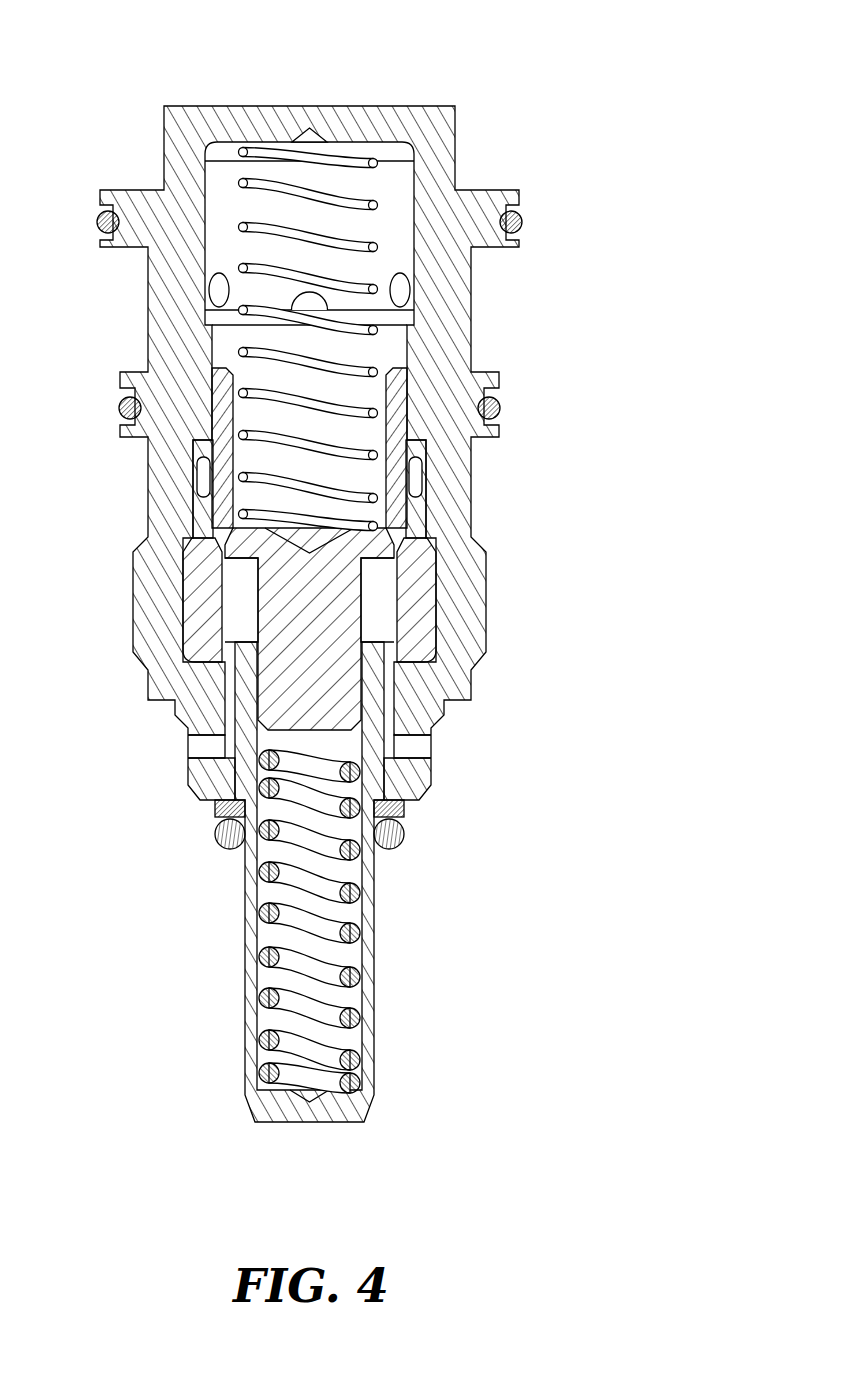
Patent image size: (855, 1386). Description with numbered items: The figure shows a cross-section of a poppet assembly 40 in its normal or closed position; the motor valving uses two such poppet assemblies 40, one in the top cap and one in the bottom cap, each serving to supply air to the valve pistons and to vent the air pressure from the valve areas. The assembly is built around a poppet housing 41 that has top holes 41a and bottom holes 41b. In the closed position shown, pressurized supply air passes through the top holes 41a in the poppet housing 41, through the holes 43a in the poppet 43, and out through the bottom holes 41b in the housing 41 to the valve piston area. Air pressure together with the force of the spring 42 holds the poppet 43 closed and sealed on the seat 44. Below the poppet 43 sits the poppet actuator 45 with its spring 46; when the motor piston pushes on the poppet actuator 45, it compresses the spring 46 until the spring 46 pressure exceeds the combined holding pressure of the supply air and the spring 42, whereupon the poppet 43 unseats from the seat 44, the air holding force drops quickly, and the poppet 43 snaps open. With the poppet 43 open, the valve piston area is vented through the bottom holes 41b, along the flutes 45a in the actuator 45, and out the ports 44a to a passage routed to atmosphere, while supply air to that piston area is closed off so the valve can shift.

The poppet assembly 40 is at (403, 65).
The poppet housing 41 is at (450, 115).
The top holes 41a is at (403, 292).
The bottom holes 41b is at (412, 475).
The spring 42 is at (375, 203).
The poppet 43 is at (398, 380).
The holes 43a is at (400, 445).
The seat 44 is at (418, 712).
The ports 44a is at (412, 747).
The poppet actuator 45 is at (368, 928).
The flutes 45a is at (388, 693).
The spring 46 is at (350, 977).